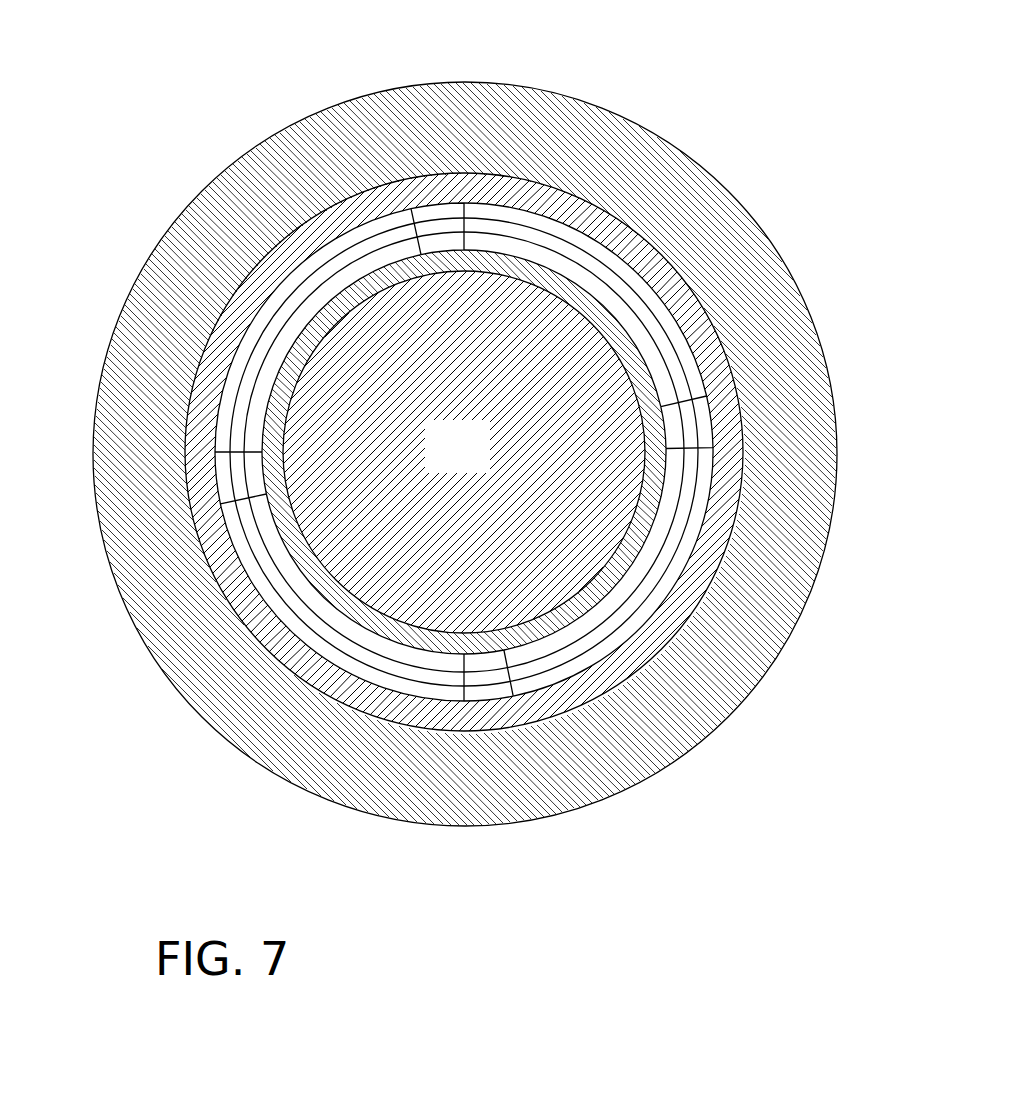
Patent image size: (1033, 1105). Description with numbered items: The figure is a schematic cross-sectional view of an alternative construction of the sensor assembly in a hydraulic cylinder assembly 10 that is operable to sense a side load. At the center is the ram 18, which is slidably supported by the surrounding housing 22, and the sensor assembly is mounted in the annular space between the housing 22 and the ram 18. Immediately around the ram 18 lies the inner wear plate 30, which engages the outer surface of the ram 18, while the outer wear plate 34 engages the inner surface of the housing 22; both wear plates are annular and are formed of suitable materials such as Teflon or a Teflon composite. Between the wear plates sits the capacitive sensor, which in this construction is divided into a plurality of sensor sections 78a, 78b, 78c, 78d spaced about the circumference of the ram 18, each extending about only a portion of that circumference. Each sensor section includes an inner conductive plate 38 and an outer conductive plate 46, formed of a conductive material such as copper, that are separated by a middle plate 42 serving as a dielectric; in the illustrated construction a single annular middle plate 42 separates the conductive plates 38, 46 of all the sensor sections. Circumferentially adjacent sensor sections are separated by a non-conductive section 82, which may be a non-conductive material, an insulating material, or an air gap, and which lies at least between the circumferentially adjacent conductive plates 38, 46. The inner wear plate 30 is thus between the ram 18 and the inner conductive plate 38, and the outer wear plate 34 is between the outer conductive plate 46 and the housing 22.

The hydraulic cylinder assembly 10 is at (185, 163).
The ram 18 is at (474, 460).
The housing 22 is at (272, 142).
The inner wear plate 30 is at (565, 628).
The outer wear plate 34 is at (668, 655).
The inner conductive plate 38 is at (523, 243).
The middle plate 42 is at (652, 307).
The outer conductive plate 46 is at (699, 348).
The sensor section 78a is at (613, 284).
The sensor section 78b is at (655, 567).
The sensor section 78c is at (317, 620).
The sensor section 78d is at (275, 322).
The non-conductive section 82 is at (438, 232).